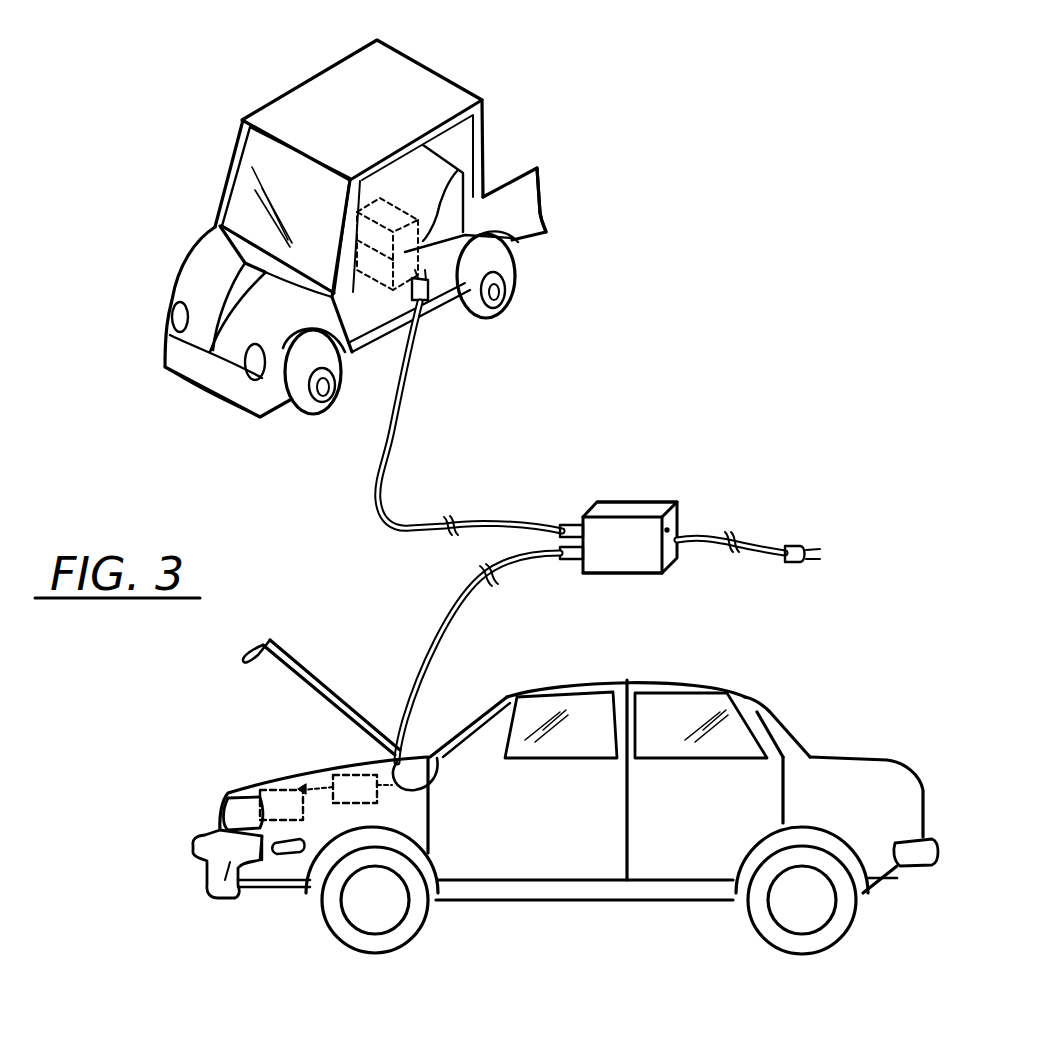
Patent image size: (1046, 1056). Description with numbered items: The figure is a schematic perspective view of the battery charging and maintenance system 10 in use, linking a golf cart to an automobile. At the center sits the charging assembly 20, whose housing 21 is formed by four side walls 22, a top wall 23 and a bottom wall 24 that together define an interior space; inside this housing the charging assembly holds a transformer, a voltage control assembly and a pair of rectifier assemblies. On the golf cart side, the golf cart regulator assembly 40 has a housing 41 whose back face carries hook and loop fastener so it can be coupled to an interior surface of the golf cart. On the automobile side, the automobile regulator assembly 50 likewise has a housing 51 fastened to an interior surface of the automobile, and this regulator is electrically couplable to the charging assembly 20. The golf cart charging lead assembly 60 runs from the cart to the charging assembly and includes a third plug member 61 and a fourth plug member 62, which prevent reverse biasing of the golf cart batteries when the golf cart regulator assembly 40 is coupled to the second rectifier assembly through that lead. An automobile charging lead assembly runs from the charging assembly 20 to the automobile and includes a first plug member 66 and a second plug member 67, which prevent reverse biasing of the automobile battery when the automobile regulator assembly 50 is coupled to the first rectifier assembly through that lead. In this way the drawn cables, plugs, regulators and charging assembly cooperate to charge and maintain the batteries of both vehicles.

The battery charging and maintenance system 10 is at (236, 631).
The charging assembly 20 is at (673, 521).
The housing 21 is at (596, 503).
The side walls 22 is at (672, 553).
The top wall 23 is at (646, 512).
The bottom wall 24 is at (638, 577).
The golf cart regulator assembly 40 is at (412, 306).
The housing 41 is at (523, 236).
The automobile regulator assembly 50 is at (363, 775).
The housing 51 is at (327, 788).
The golf cart charging lead assembly 60 is at (387, 477).
The third plug member 61 is at (572, 523).
The fourth plug member 62 is at (430, 292).
The first plug member 66 is at (570, 562).
The second plug member 67 is at (446, 638).